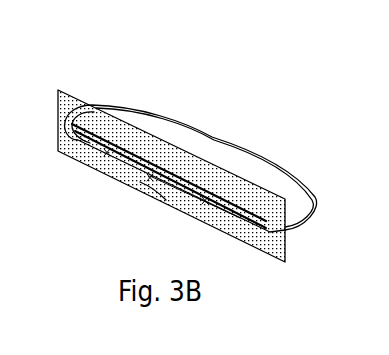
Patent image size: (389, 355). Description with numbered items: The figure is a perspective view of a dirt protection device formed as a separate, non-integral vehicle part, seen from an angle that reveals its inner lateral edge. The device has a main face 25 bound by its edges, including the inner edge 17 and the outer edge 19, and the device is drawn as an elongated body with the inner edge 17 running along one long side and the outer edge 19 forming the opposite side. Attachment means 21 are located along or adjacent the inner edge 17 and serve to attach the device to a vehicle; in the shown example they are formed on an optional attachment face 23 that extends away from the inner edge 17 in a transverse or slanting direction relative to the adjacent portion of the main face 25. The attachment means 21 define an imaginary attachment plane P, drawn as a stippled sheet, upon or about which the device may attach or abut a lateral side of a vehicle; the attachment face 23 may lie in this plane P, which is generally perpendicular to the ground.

The attachment plane P is at (58, 138).
The inner edge 17 is at (134, 148).
The outer edge 19 is at (212, 137).
The attachment means 21 is at (153, 184).
The attachment face 23 is at (118, 162).
The main face 25 is at (245, 167).